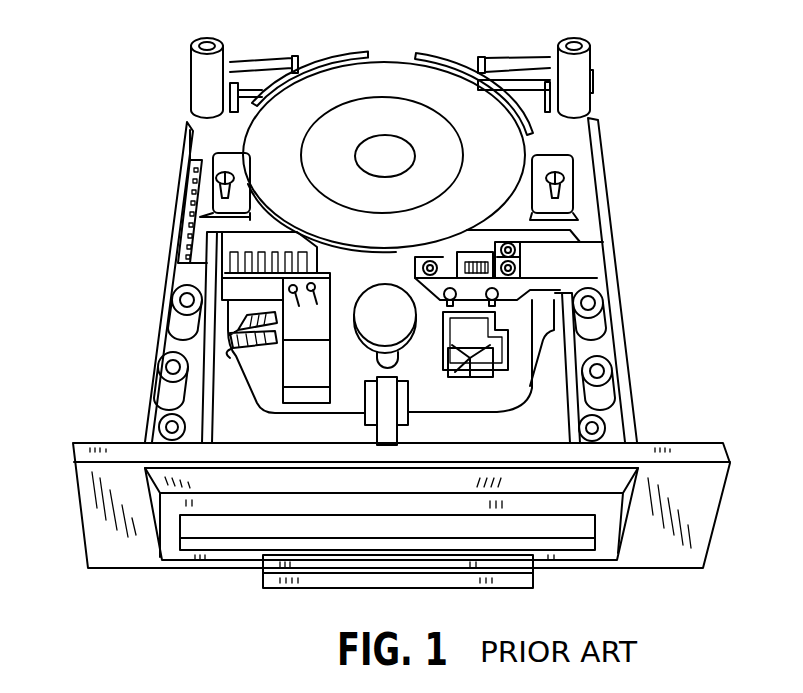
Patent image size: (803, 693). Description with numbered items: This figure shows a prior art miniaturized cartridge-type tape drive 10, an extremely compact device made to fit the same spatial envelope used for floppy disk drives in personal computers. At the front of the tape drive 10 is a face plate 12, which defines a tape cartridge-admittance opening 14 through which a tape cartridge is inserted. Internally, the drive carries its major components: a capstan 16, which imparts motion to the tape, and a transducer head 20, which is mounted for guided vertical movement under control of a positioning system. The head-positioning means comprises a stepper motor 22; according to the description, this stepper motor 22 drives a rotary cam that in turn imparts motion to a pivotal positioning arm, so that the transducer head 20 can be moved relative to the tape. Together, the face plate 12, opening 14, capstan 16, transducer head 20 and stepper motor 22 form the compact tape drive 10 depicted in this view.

The tape drive 10 is at (648, 160).
The face plate 12 is at (95, 528).
The tape cartridge-admittance opening 14 is at (205, 528).
The capstan 16 is at (385, 364).
The transducer head 20 is at (449, 371).
The stepper motor 22 is at (388, 152).